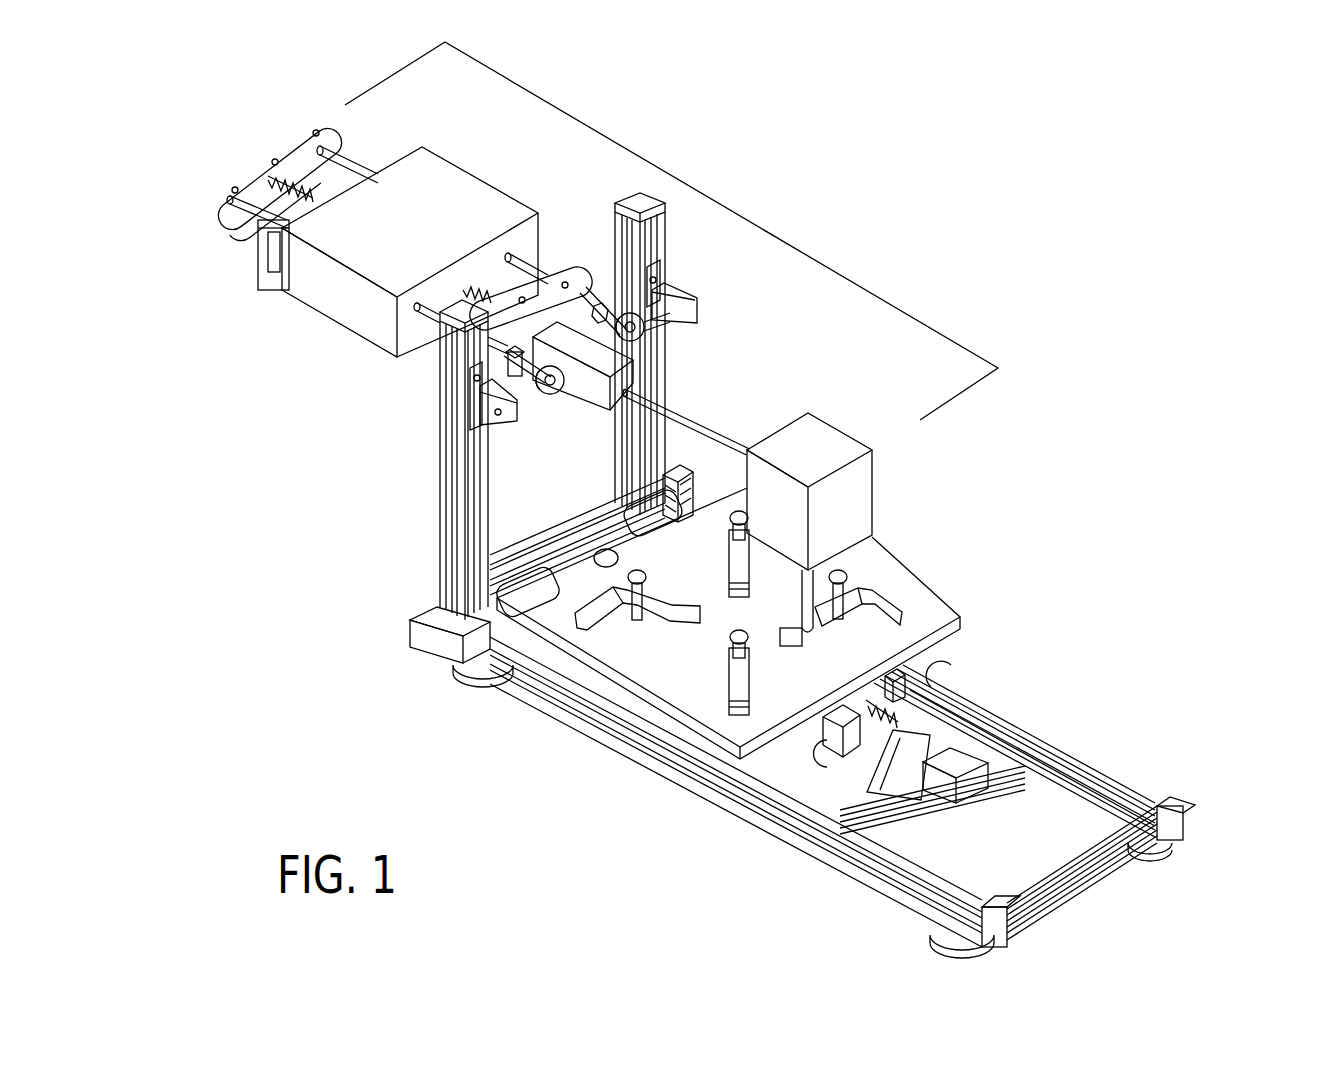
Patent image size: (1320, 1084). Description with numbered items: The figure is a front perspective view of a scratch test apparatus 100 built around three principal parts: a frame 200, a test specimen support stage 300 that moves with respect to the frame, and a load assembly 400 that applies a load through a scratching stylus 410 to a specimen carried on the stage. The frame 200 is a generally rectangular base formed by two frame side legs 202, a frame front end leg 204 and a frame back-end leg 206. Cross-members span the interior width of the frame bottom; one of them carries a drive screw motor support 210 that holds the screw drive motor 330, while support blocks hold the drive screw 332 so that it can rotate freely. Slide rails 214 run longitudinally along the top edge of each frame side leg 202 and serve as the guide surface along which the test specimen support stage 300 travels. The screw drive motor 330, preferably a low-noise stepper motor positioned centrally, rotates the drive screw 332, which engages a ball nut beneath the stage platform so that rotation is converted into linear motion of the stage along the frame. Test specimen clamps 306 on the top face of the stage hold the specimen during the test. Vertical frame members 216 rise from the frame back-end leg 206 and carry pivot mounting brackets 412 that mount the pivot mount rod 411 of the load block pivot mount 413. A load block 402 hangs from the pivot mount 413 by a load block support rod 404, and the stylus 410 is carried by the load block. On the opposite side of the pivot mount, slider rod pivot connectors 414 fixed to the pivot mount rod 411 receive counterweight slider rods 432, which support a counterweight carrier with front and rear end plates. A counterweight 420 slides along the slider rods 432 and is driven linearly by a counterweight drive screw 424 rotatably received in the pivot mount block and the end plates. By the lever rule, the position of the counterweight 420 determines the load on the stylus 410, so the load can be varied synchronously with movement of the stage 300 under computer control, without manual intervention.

The scratch test apparatus 100 is at (1024, 303).
The frame 200 is at (864, 800).
The frame side legs 202 is at (1157, 783).
The frame front end leg 204 is at (1125, 853).
The frame back-end leg 206 is at (430, 613).
The drive screw motor support 210 is at (957, 717).
The slide rails 214 is at (520, 592).
The vertical frame members 216 is at (665, 230).
The test specimen support stage 300 is at (634, 686).
The test specimen clamps 306 is at (733, 552).
The screw drive motor 330 is at (973, 788).
The drive screw 332 is at (918, 680).
The load assembly 400 is at (700, 190).
The load block 402 is at (840, 443).
The load block support rod 404 is at (732, 447).
The scratching stylus 410 is at (807, 628).
The pivot mount rod 411 is at (527, 397).
The pivot mounting brackets 412 is at (697, 297).
The load block pivot mount 413 is at (593, 387).
The slider rod pivot connectors 414 is at (667, 342).
The counterweight 420 is at (438, 192).
The counterweight drive screw 424 is at (287, 180).
The counterweight slider rods 432 is at (343, 163).